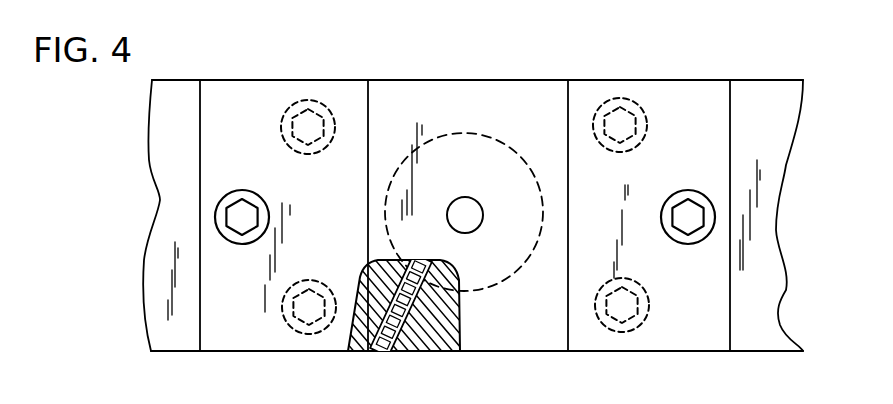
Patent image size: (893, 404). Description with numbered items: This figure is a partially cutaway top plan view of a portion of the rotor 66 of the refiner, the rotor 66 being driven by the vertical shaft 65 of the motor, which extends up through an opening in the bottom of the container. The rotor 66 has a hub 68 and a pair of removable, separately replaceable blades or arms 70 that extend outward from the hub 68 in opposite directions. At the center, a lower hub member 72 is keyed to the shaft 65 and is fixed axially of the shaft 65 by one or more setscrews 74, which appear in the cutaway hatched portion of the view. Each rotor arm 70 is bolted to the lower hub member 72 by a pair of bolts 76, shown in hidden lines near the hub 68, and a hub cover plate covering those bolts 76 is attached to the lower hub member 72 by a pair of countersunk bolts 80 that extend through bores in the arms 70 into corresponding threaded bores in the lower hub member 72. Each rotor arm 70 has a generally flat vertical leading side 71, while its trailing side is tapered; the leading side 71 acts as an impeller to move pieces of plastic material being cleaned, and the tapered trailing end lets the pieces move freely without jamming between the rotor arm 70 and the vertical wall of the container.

The vertical shaft 65 is at (478, 133).
The rotor 66 is at (618, 65).
The hub 68 is at (413, 80).
The rotor arm 70 is at (175, 97).
The leading side 71 is at (176, 353).
The lower hub member 72 is at (438, 352).
The setscrew 74 is at (380, 352).
The bolt 76 is at (324, 280).
The countersunk bolt 80 is at (247, 190).